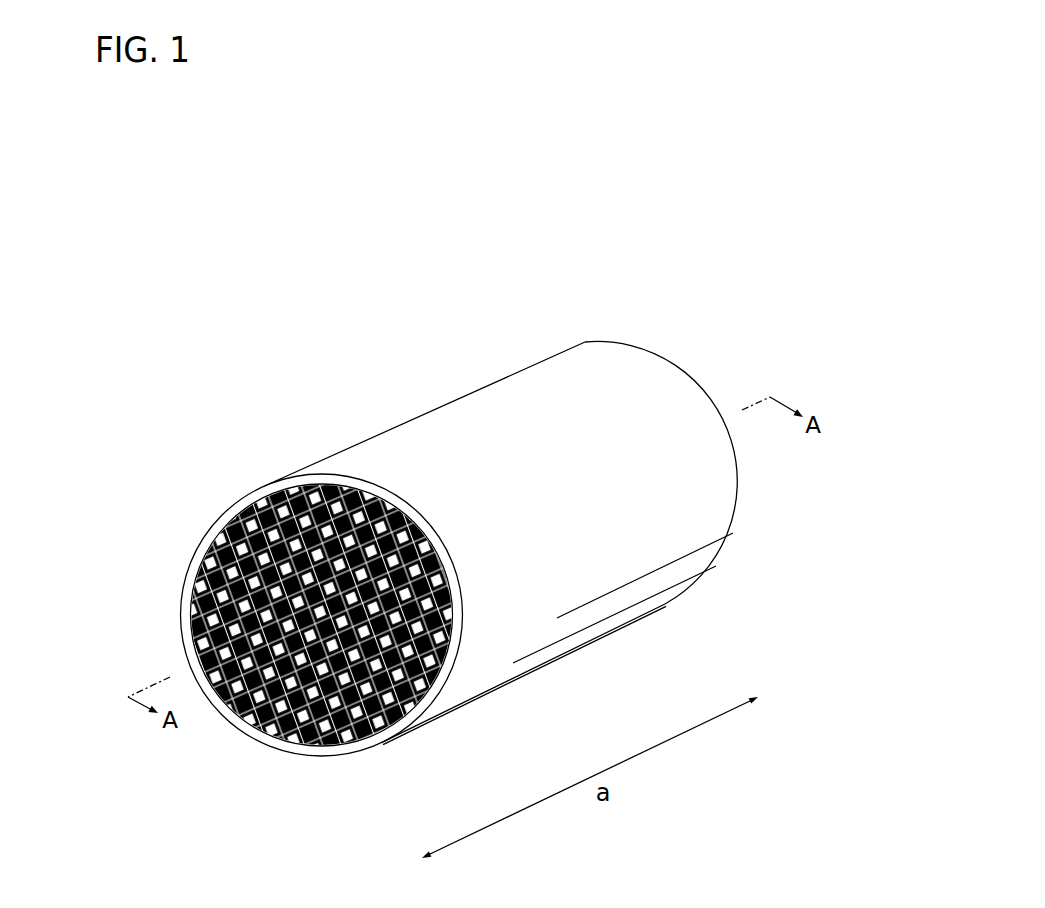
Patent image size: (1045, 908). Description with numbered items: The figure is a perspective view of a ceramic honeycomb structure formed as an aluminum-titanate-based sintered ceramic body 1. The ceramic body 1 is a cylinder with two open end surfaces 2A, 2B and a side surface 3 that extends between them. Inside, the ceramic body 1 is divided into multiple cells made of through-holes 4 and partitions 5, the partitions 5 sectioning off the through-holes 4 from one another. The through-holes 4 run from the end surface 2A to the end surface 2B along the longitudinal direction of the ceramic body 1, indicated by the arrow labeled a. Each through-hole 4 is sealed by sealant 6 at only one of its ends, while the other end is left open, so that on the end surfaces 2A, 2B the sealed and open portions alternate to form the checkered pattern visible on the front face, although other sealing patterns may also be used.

The ceramic body 1 is at (456, 513).
The end surface 2A is at (193, 536).
The end surface 2B is at (706, 361).
The side surface 3 is at (575, 620).
The through-holes 4 is at (316, 690).
The partitions 5 is at (270, 673).
The sealant 6 is at (392, 693).